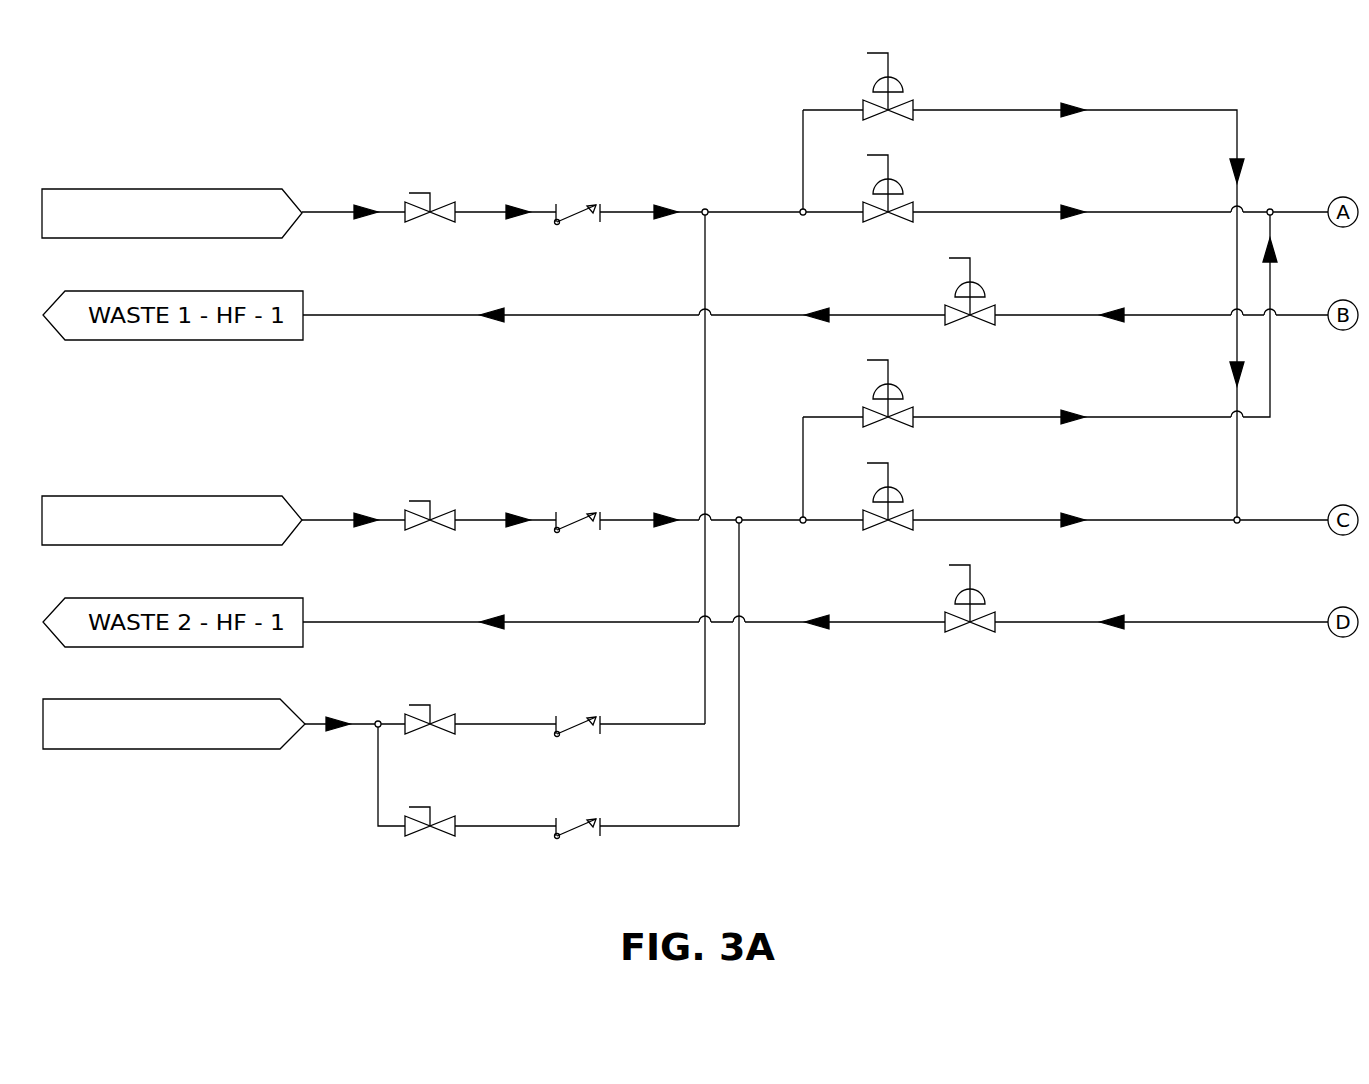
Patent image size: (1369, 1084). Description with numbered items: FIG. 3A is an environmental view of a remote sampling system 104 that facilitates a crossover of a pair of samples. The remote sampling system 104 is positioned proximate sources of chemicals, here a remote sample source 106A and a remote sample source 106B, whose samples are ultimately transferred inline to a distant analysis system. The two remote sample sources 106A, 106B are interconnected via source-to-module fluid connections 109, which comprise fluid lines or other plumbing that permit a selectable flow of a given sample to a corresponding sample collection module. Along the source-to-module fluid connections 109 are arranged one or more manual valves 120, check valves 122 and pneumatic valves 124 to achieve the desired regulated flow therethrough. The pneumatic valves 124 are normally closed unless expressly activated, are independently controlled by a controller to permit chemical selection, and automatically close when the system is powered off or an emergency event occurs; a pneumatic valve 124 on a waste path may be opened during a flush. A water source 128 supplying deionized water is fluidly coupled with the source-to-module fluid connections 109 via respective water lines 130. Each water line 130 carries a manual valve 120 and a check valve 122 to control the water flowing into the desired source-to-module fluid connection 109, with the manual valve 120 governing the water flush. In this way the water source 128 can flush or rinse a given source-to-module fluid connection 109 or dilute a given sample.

The remote sampling system 104 is at (283, 89).
The remote sample source 106A is at (166, 188).
The remote sample source 106B is at (166, 495).
The source-to-module fluid connection 109 is at (626, 205).
The manual valve 120 is at (433, 204).
The check valve 122 is at (568, 205).
The pneumatic valve 124 is at (893, 118).
The water source 128 is at (163, 752).
The water line 130 is at (702, 417).